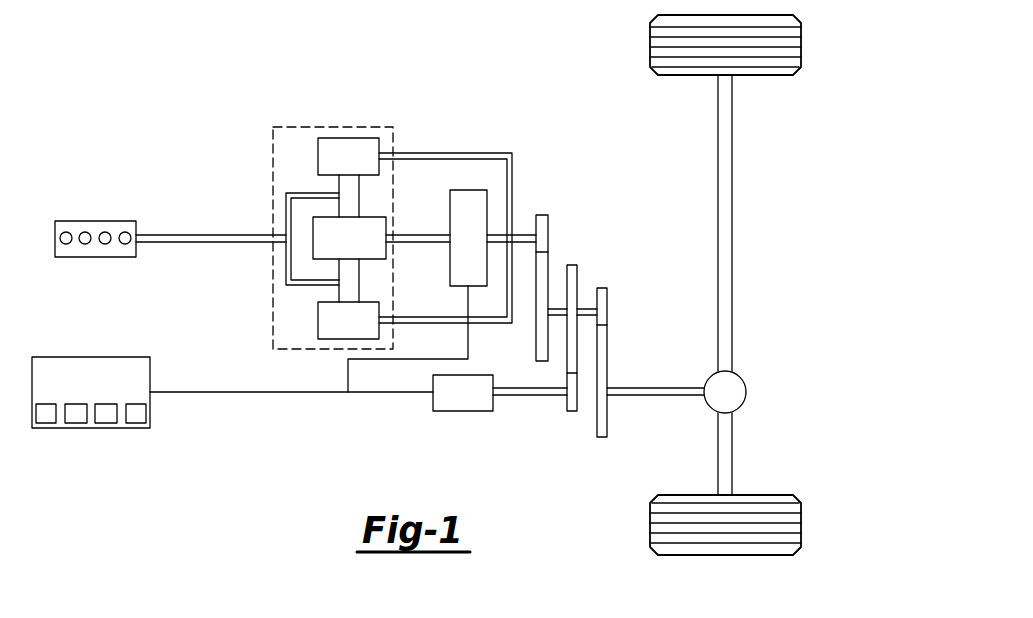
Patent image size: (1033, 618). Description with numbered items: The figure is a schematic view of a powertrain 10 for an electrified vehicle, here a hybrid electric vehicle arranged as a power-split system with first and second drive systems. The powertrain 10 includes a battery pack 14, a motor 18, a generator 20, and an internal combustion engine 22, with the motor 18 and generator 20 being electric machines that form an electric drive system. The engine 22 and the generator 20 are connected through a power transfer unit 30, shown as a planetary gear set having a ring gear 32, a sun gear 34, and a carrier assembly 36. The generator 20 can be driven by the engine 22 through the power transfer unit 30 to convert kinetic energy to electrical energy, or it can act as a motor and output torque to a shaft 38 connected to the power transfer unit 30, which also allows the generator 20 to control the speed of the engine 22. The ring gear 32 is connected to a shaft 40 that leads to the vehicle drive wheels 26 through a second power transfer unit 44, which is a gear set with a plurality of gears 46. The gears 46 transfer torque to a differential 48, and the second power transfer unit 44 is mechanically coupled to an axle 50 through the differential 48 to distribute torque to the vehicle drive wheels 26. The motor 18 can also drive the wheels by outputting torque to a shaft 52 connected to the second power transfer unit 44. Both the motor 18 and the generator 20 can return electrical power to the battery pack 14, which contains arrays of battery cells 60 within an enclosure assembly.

The powertrain 10 is at (133, 52).
The battery pack 14 is at (91, 357).
The motor 18 is at (463, 411).
The generator 20 is at (487, 203).
The internal combustion engine 22 is at (55, 222).
The vehicle drive wheels 26 is at (801, 45).
The power transfer unit 30 is at (393, 127).
The ring gear 32 is at (318, 163).
The sun gear 34 is at (372, 260).
The carrier assembly 36 is at (286, 218).
The shaft 38 is at (421, 233).
The shaft 40 is at (527, 244).
The second power transfer unit 44 is at (619, 323).
The gears 46 is at (548, 233).
The differential 48 is at (746, 391).
The axle 50 is at (732, 228).
The shaft 52 is at (530, 396).
The battery cells 60 is at (46, 424).